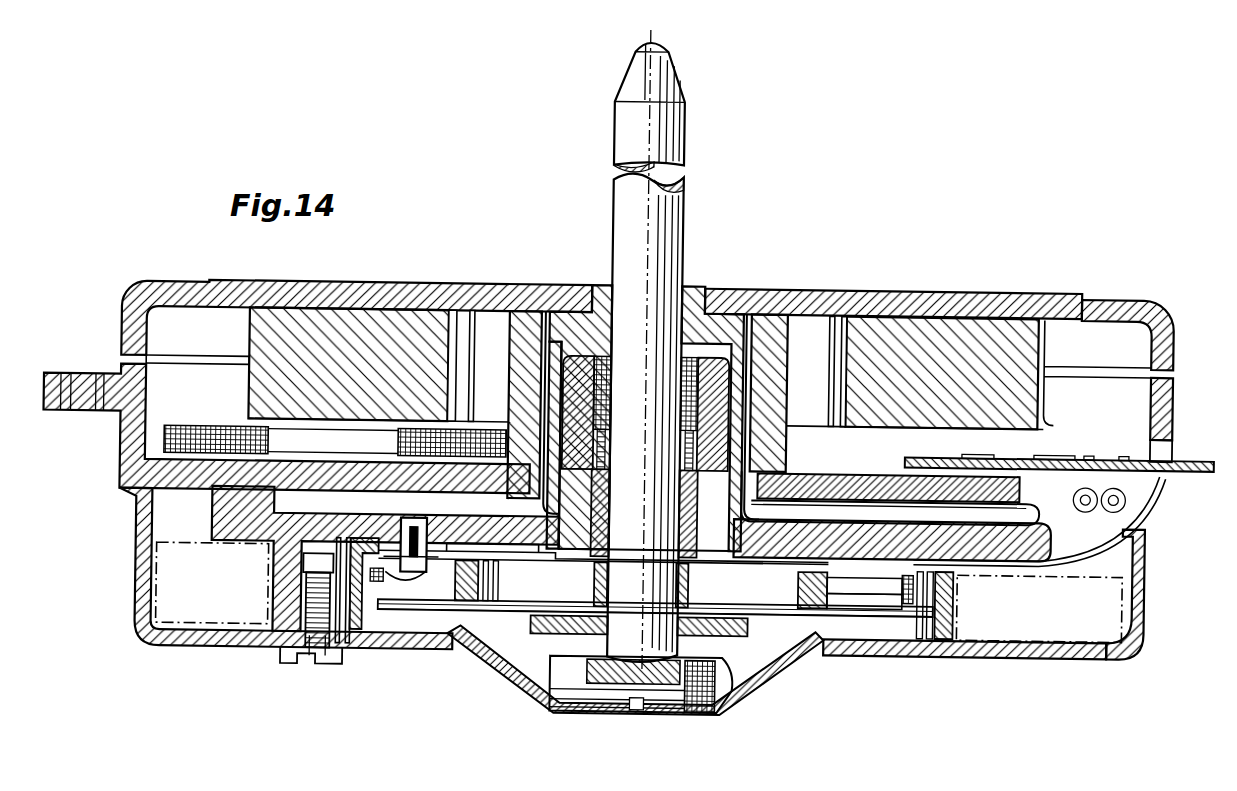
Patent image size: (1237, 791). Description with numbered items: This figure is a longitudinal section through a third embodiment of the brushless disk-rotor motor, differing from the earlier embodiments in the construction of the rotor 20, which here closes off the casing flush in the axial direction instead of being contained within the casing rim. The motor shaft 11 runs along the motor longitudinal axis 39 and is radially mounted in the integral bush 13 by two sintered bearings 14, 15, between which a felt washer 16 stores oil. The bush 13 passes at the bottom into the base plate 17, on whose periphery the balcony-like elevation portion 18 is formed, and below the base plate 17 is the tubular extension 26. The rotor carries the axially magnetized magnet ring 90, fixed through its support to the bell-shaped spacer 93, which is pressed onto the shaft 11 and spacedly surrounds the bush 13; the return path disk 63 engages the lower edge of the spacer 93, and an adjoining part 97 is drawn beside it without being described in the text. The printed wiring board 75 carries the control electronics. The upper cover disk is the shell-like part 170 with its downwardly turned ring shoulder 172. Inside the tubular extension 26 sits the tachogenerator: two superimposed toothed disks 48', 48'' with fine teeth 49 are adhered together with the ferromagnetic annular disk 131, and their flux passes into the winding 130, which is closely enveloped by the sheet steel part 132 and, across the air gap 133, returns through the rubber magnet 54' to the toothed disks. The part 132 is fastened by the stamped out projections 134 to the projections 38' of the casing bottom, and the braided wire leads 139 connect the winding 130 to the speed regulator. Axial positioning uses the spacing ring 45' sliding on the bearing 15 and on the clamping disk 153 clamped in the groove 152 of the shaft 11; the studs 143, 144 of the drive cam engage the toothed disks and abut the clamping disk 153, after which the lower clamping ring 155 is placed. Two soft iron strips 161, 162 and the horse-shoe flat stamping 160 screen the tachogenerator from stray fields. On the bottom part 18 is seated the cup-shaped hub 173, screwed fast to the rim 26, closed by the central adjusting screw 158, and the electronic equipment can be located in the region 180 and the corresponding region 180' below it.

The motor shaft 11 is at (680, 130).
The bush 13 is at (722, 400).
The sintered bearing 14 is at (610, 380).
The sintered bearing 15 is at (600, 506).
The felt washer 16 is at (612, 442).
The base plate 17 is at (224, 517).
The balcony-like elevation portion 18 is at (188, 470).
The rotor 20 is at (474, 284).
The tubular extension 26 is at (302, 618).
The projections of the casing bottom 38' is at (502, 580).
The motor longitudinal axis 39 is at (657, 230).
The spacing ring 45' is at (655, 597).
The toothed disk 48' is at (864, 644).
The toothed disk 48'' is at (829, 634).
The teeth 49 is at (900, 636).
The rubber magnet 54' is at (372, 619).
The return path disk 63 is at (860, 480).
The printed wiring board 75 is at (1190, 461).
The magnet ring 90 is at (372, 320).
The bell-shaped spacer 93 is at (770, 365).
The ring cup 97 is at (788, 466).
The winding 130 is at (957, 588).
The ferromagnetic annular disk 131 is at (470, 590).
The sheet steel part 132 is at (400, 600).
The air gap 133 is at (944, 650).
The stamped out projections 134 is at (440, 612).
The braided wire leads 139 is at (1078, 546).
The projecting stud 143 is at (556, 622).
The projecting stud 144 is at (726, 636).
The groove 152 is at (686, 598).
The clamping disk 153 is at (700, 610).
The lower clamping ring 155 is at (740, 688).
The screw 158 is at (680, 705).
The flat stamping 160 is at (272, 555).
The soft iron strip 161 is at (337, 652).
The soft iron strip 162 is at (350, 654).
The shell-like part 170 is at (757, 290).
The ring shoulder 172 is at (1118, 300).
The cup-shaped hub 173 is at (1148, 644).
The region 180 is at (1152, 594).
The housing wall 180' is at (271, 569).